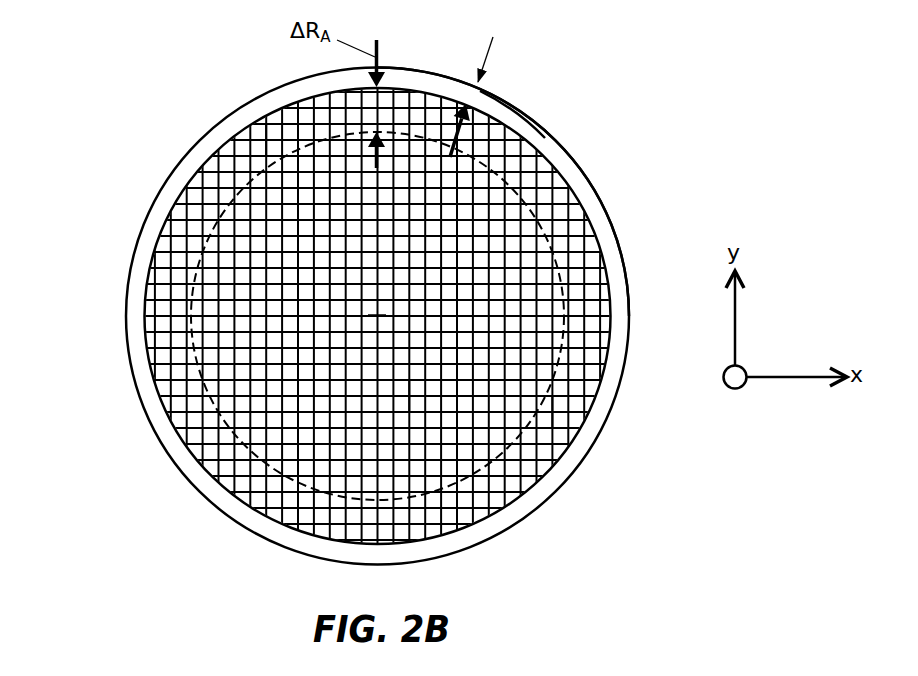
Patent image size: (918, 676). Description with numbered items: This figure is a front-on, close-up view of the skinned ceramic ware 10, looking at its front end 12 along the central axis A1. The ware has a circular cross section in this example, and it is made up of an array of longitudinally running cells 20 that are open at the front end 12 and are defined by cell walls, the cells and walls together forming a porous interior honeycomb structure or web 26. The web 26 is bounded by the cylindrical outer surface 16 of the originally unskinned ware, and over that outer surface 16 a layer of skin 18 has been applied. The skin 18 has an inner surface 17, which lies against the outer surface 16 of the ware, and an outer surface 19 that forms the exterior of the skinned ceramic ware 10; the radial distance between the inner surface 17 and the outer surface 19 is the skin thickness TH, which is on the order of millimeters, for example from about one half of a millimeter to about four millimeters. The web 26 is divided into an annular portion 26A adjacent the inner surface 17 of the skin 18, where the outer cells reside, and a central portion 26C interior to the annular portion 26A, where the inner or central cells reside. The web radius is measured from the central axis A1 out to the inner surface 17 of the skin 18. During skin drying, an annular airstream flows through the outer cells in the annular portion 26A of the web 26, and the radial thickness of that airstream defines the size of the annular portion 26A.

The skinned ceramic ware 10 is at (149, 122).
The front end 12 is at (183, 344).
The outer surface 16 is at (557, 167).
The inner surface 17 is at (520, 149).
The skin 18 is at (597, 208).
The outer surface 19 is at (600, 190).
The cells 20 is at (167, 298).
The web 26 is at (279, 139).
The annular portion 26A is at (563, 411).
The central portion 26C is at (425, 390).
The central axis A1 is at (377, 316).
The skin thickness TH is at (481, 76).